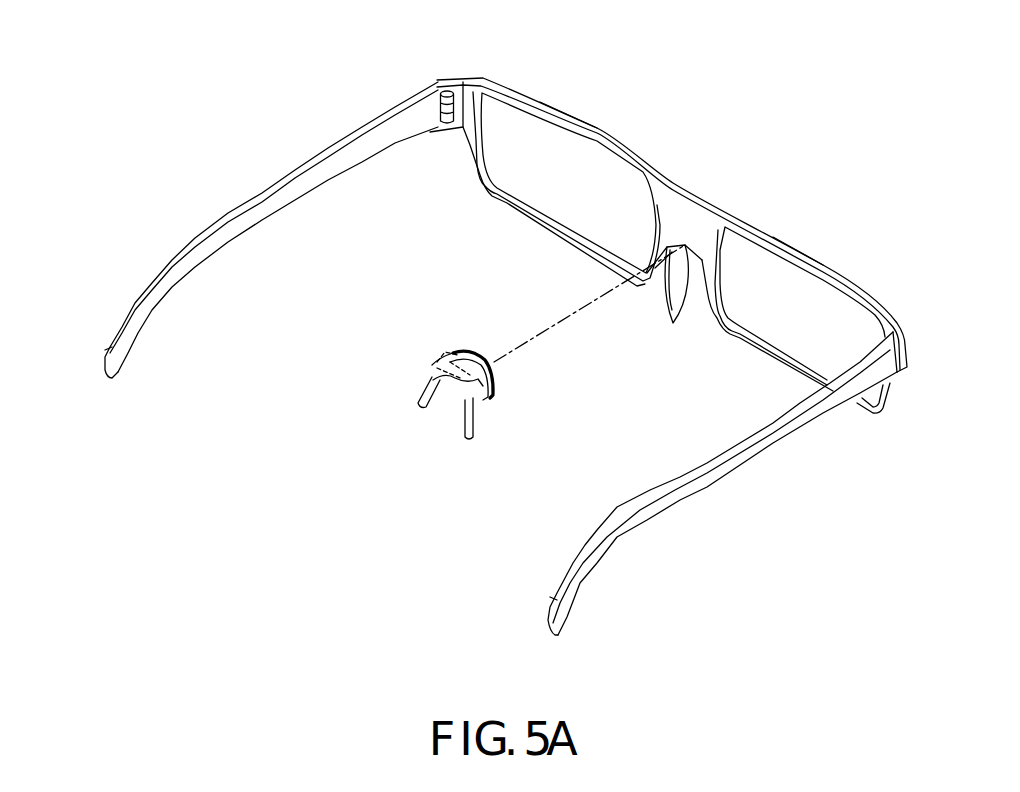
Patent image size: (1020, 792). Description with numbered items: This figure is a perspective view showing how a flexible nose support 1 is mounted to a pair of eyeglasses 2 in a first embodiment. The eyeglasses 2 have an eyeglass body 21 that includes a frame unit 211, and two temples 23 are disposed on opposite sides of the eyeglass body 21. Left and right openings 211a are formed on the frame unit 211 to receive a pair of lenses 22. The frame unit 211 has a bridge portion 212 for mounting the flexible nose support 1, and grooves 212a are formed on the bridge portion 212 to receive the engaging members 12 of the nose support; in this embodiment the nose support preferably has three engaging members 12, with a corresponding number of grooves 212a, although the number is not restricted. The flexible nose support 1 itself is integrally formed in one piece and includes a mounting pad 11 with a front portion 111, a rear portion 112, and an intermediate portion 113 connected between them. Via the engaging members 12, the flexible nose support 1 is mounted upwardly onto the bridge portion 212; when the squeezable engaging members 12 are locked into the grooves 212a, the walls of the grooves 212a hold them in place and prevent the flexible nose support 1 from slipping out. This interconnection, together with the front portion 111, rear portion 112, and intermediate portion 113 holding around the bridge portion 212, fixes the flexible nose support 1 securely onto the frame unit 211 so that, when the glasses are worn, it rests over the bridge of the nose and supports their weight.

The eyeglasses 2 is at (300, 75).
The eyeglass body 21 is at (530, 90).
The frame unit 211 is at (678, 185).
The left and right opening 211a is at (597, 152).
The bridge portion 212 is at (693, 228).
The groove 212a is at (679, 302).
The lenses 22 is at (537, 190).
The temples 23 is at (138, 325).
The flexible nose support 1 is at (439, 425).
The mounting pad 11 is at (497, 374).
The front portion 111 is at (478, 370).
The rear portion 112 is at (477, 400).
The intermediate portion 113 is at (430, 377).
The engaging member 12 is at (453, 358).